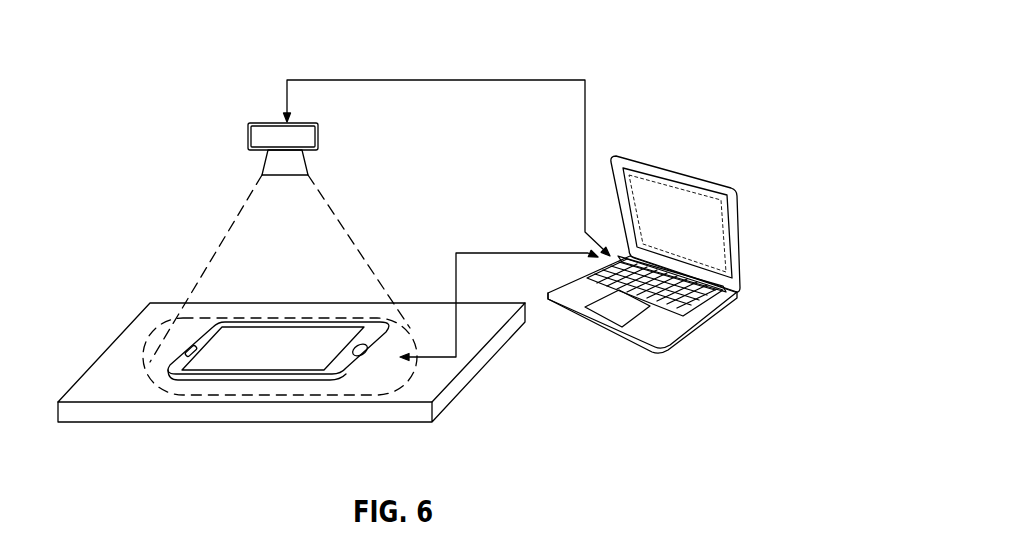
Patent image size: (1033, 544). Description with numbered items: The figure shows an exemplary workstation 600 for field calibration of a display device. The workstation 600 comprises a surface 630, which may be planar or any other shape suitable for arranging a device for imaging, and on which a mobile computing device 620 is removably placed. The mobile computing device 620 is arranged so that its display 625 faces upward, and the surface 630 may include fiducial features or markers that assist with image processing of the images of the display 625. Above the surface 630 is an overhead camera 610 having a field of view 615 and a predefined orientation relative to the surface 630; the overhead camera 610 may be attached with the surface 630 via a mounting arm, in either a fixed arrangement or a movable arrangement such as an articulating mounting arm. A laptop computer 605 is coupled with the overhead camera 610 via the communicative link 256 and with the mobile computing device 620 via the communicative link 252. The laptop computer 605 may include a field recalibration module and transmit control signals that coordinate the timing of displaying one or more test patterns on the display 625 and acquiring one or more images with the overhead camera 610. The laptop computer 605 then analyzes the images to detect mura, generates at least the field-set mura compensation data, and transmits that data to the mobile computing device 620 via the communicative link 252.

The workstation 600 is at (716, 40).
The laptop computer 605 is at (737, 240).
The overhead camera 610 is at (318, 137).
The field of view 615 is at (340, 225).
The mobile computing device 620 is at (255, 376).
The display 625 is at (260, 343).
The surface 630 is at (140, 332).
The communicative link 252 is at (456, 323).
The communicative link 256 is at (435, 80).